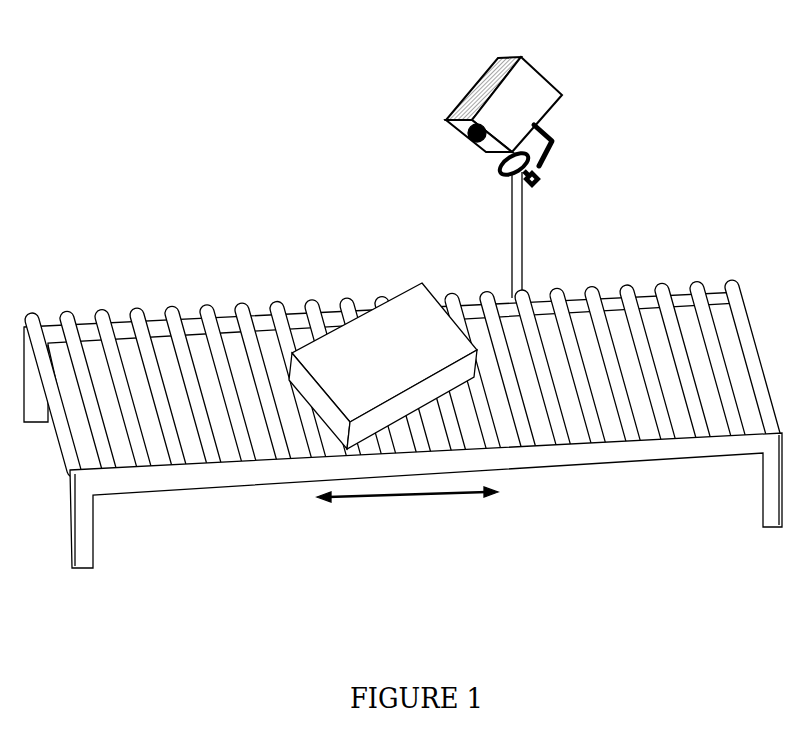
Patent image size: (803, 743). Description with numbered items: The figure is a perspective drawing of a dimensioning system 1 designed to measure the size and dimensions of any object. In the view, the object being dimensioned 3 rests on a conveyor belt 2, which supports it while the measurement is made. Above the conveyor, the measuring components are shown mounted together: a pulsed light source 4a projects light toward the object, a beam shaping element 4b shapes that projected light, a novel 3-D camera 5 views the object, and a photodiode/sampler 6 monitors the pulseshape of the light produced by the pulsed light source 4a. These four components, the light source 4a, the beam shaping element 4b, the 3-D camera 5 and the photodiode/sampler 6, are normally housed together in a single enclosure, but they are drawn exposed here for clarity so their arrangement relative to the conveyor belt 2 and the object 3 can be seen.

The dimensioning system 1 is at (521, 155).
The conveyor belt 2 is at (172, 371).
The object being dimensioned 3 is at (325, 375).
The pulsed light source 4a is at (565, 157).
The beam shaping element 4b is at (492, 170).
The 3-D camera 5 is at (428, 111).
The photodiode/sampler 6 is at (547, 194).